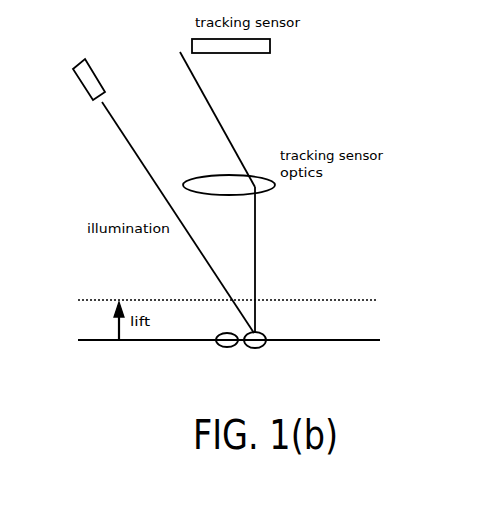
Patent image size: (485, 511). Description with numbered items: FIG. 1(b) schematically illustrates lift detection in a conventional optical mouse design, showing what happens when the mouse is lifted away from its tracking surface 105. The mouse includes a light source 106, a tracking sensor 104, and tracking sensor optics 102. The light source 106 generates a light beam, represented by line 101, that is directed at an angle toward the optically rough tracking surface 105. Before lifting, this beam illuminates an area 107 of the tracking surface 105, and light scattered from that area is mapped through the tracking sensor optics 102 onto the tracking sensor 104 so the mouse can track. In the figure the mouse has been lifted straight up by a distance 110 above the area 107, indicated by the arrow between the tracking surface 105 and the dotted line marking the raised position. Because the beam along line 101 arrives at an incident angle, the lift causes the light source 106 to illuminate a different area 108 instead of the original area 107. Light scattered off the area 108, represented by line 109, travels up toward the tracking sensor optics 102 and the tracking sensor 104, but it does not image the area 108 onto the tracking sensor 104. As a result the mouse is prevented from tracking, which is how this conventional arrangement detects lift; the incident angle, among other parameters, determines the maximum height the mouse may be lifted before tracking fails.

The light beam 101 is at (137, 162).
The tracking sensor optics 102 is at (275, 186).
The tracking sensor 104 is at (257, 53).
The tracking surface 105 is at (360, 340).
The light source 106 is at (79, 81).
The area 107 is at (222, 347).
The area 108 is at (263, 347).
The line representing scattered light 109 is at (257, 252).
The distance 110 is at (117, 318).